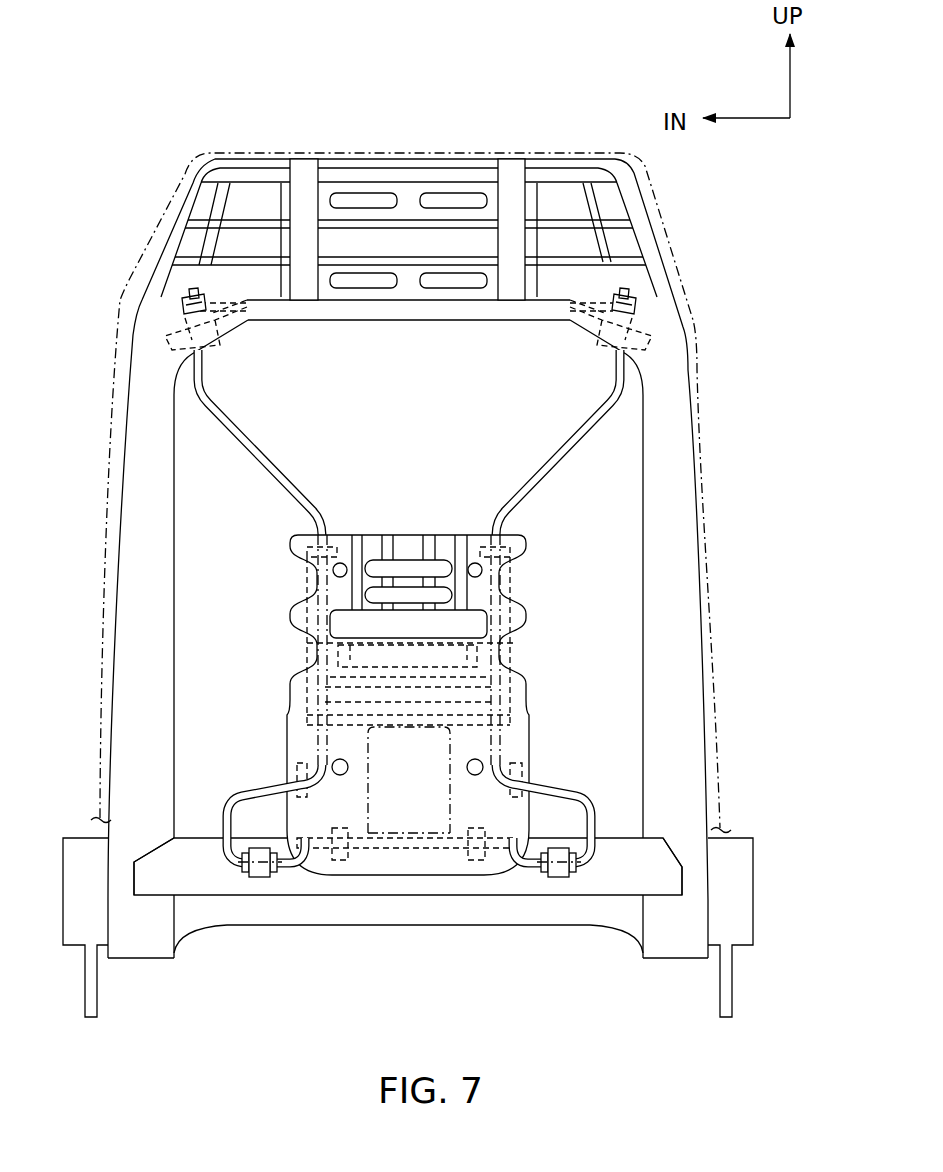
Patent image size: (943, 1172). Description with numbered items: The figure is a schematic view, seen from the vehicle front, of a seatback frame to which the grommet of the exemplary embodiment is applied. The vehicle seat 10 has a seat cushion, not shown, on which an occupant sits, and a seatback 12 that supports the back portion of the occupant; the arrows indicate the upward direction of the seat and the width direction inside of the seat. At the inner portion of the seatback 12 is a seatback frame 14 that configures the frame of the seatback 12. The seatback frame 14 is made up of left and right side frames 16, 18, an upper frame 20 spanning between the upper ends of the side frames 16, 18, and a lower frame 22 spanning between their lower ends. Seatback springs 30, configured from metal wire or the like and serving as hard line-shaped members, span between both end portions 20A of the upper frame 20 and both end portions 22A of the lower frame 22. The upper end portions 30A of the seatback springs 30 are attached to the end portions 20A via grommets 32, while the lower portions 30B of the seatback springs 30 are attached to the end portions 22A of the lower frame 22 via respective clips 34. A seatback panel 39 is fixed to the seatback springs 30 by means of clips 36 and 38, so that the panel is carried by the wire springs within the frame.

The vehicle seat 10 is at (723, 282).
The seatback 12 is at (710, 505).
The seatback frame 14 is at (695, 418).
The side frame 16 is at (640, 628).
The side frame 18 is at (178, 617).
The upper frame 20 is at (430, 327).
The end portion of the upper frame 20A is at (174, 296).
The lower frame 22 is at (627, 838).
The end portion of the lower frame 22A is at (196, 838).
The seatback spring 30 is at (277, 460).
The upper end portion of the seatback spring 30A is at (182, 292).
The lower portion of the seatback spring 30B is at (278, 873).
The grommet 32 is at (168, 297).
The clip 34 is at (262, 880).
The clip 36 is at (297, 553).
The clip 38 is at (470, 862).
The seatback panel 39 is at (428, 533).